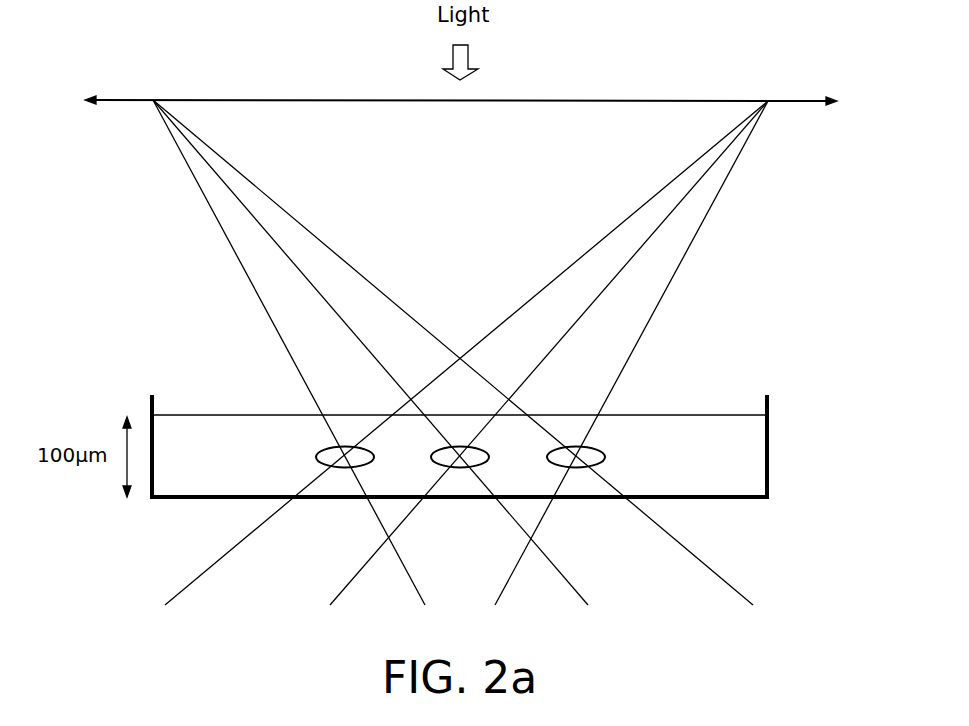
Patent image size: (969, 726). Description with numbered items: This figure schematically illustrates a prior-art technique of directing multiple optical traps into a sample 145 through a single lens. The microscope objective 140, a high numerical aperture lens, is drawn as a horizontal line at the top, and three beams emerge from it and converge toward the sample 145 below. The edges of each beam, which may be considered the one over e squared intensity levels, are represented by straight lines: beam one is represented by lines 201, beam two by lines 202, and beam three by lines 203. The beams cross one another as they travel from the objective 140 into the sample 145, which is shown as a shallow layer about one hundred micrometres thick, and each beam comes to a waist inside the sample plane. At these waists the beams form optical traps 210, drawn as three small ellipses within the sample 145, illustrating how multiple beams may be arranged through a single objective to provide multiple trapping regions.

The microscope objective 140 is at (140, 100).
The lines representing beam 1 201 is at (243, 275).
The lines representing beam 2 202 is at (318, 288).
The lines representing beam 3 203 is at (270, 200).
The sample 145 is at (230, 425).
The optical traps 210 is at (316, 455).